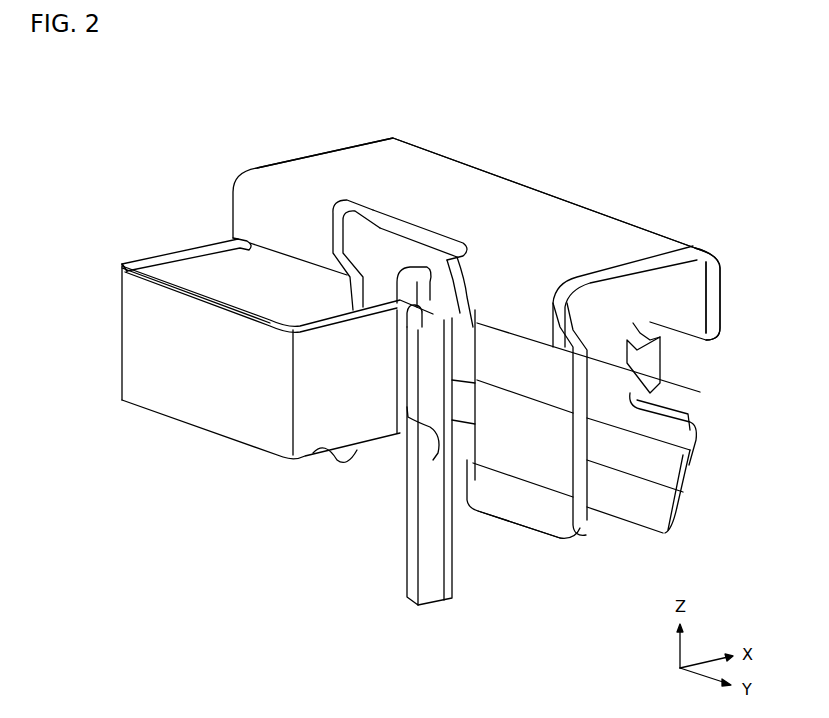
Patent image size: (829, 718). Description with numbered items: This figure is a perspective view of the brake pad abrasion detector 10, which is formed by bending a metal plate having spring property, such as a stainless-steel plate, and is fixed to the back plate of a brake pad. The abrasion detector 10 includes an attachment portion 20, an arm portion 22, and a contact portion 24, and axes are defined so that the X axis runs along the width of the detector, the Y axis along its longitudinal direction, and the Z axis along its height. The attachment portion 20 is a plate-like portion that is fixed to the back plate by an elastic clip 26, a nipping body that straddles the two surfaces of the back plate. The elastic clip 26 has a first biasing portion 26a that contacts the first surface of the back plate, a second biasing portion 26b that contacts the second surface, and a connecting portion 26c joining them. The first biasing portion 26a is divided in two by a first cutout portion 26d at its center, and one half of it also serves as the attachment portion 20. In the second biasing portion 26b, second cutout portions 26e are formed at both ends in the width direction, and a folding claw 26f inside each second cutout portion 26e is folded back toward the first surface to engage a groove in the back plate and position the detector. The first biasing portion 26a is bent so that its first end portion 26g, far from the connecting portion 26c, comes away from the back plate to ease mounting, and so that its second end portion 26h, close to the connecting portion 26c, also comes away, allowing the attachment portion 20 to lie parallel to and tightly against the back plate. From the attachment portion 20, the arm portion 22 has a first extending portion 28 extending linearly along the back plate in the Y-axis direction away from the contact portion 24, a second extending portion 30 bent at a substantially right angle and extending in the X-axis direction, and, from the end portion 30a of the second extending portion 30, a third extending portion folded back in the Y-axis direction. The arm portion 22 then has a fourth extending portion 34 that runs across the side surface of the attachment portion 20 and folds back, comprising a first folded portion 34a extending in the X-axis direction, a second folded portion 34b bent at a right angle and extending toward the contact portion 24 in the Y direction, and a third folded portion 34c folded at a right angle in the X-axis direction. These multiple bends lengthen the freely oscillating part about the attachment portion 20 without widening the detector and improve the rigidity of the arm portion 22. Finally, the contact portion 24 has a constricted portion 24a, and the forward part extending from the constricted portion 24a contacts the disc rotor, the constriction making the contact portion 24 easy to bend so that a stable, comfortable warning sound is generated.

The abrasion detector 10 is at (154, 208).
The attachment portion 20 is at (260, 298).
The arm portion 22 is at (187, 412).
The contact portion 24 is at (438, 563).
The constricted portion 24a is at (408, 432).
The elastic clip 26 is at (643, 237).
The first biasing portion 26a is at (518, 462).
The second biasing portion 26b is at (718, 322).
The connecting portion 26c is at (478, 187).
The first cutout portion 26d is at (352, 200).
The second cutout portion 26e is at (387, 247).
The folding claw 26f is at (419, 283).
The first end portion 26g is at (337, 463).
The second end portion 26h is at (280, 214).
The first extending portion 28 is at (247, 243).
The second extending portion 30 is at (138, 257).
The end portion 30a is at (120, 265).
The fourth extending portion 34 is at (387, 400).
The first folded portion 34a is at (322, 420).
The second folded portion 34b is at (686, 430).
The third folded portion 34c is at (677, 490).